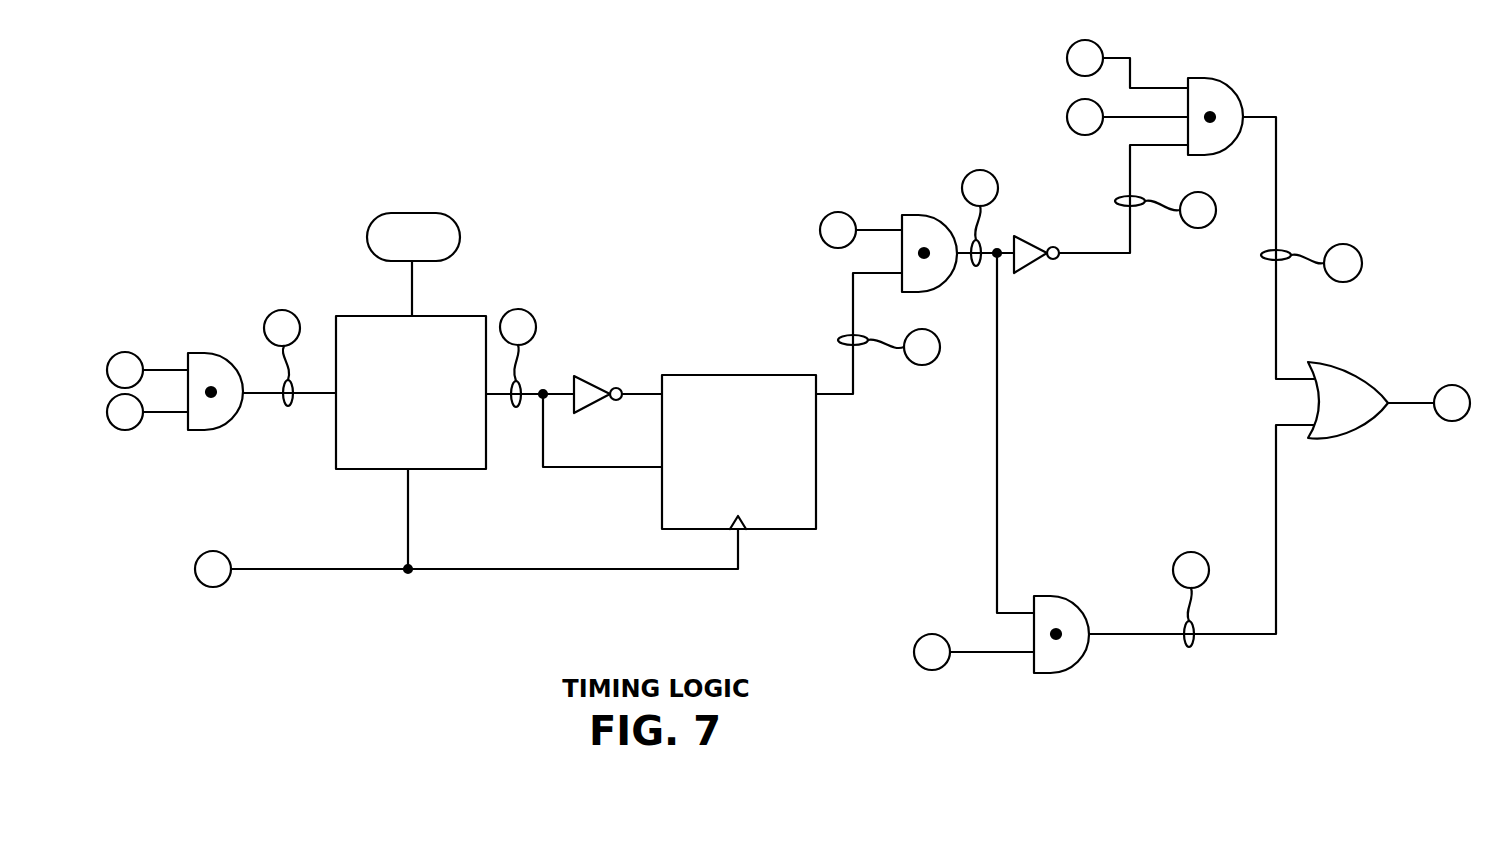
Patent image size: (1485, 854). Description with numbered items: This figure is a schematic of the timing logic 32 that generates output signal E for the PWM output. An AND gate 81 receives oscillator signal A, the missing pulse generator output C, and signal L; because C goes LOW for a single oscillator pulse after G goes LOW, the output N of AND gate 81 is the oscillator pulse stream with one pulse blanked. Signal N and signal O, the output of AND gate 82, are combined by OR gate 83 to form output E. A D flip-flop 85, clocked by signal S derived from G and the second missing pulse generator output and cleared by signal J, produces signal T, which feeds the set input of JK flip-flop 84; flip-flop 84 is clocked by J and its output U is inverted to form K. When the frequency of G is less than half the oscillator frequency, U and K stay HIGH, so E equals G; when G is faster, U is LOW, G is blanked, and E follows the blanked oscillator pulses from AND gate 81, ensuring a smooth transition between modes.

The timing logic 32 is at (556, 141).
The AND gate 81 is at (1220, 86).
The AND gate 82 is at (1067, 602).
The OR gate 83 is at (1363, 375).
The JK flip-flop 84 is at (745, 375).
The D flip-flop 85 is at (356, 315).